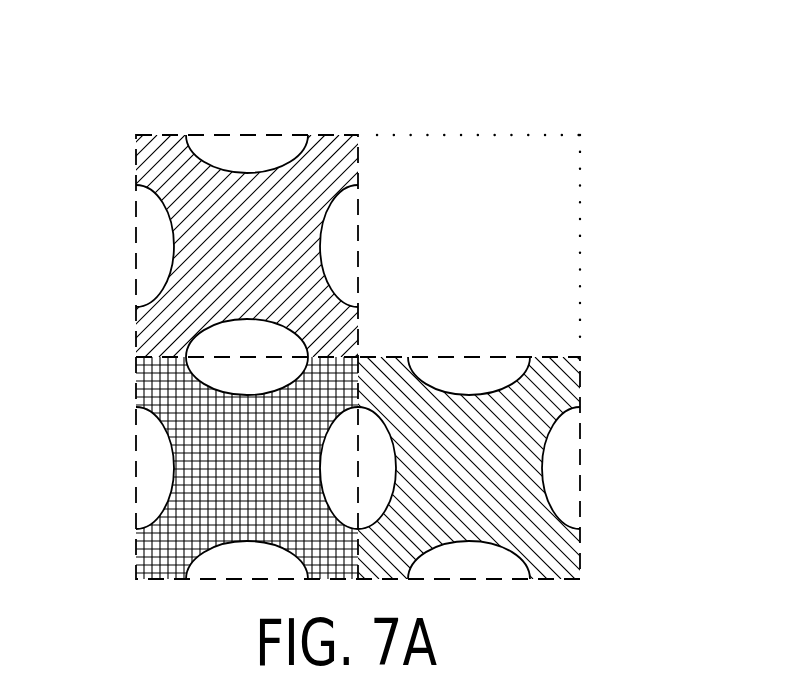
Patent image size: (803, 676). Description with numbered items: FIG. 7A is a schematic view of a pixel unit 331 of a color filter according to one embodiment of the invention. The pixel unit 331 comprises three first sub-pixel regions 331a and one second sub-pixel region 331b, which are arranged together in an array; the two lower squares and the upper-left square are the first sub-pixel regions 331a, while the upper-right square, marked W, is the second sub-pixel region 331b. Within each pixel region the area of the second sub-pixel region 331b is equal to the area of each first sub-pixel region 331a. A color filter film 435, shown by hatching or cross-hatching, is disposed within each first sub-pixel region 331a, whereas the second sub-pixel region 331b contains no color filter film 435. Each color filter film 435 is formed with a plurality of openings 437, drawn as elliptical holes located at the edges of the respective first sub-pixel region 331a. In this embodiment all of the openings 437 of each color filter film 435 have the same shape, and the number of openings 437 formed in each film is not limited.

The pixel unit 331 is at (472, 46).
The first sub-pixel region 331a is at (263, 135).
The second sub-pixel region 331b is at (428, 132).
The color filter film 435 is at (147, 327).
The opening 437 is at (145, 203).